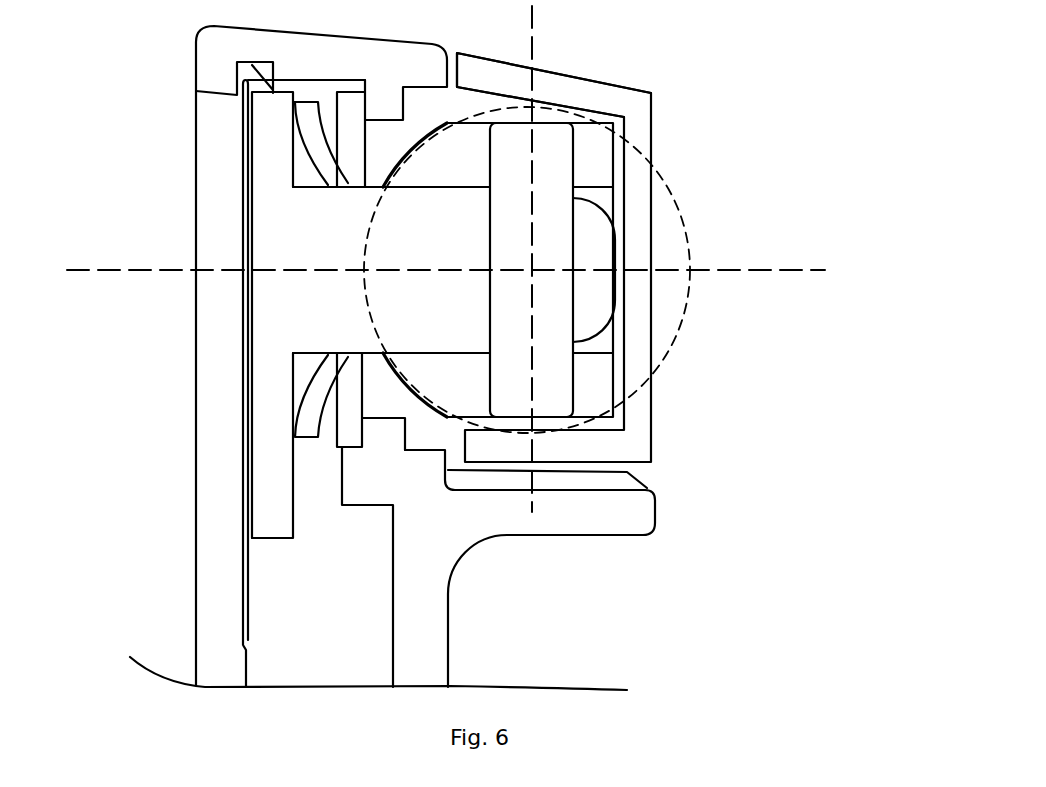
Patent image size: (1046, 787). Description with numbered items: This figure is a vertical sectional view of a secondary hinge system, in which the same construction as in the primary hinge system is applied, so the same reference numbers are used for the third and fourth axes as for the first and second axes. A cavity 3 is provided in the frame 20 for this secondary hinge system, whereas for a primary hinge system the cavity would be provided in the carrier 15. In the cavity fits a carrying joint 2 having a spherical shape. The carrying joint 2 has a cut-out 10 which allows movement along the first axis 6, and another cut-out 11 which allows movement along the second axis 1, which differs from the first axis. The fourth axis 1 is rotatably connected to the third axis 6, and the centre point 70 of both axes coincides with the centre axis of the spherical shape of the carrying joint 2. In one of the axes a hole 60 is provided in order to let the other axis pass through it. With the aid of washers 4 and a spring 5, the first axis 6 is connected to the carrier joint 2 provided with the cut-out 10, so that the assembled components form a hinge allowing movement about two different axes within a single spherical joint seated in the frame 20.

The second axis 1 is at (545, 156).
The carrying joint 2 is at (445, 170).
The cavity 3 is at (385, 378).
The washers 4 is at (345, 420).
The spring 5 is at (317, 115).
The first axis 6 is at (325, 225).
The cut-out 10 is at (585, 197).
The cut-out 11 is at (495, 380).
The carrier 15 is at (545, 78).
The frame 20 is at (227, 582).
The hole 60 is at (497, 325).
The centre point 70 is at (570, 270).